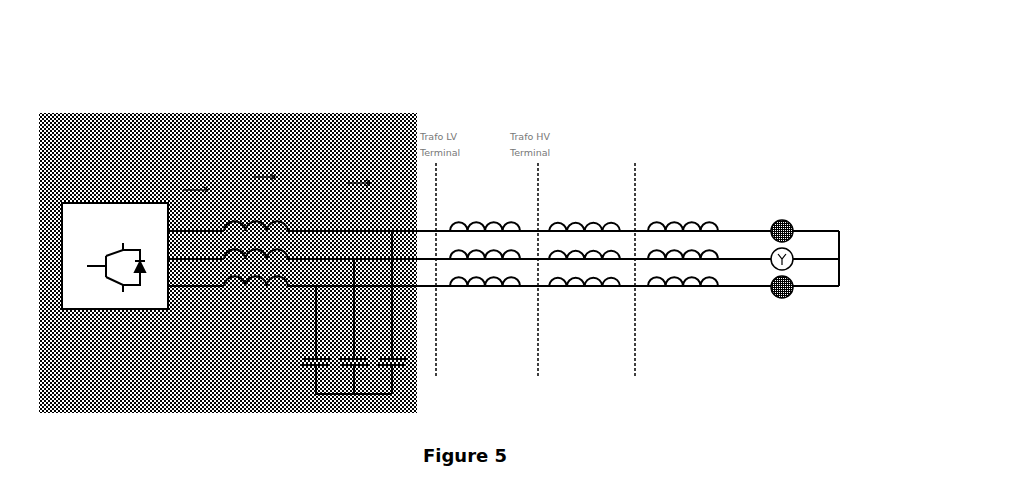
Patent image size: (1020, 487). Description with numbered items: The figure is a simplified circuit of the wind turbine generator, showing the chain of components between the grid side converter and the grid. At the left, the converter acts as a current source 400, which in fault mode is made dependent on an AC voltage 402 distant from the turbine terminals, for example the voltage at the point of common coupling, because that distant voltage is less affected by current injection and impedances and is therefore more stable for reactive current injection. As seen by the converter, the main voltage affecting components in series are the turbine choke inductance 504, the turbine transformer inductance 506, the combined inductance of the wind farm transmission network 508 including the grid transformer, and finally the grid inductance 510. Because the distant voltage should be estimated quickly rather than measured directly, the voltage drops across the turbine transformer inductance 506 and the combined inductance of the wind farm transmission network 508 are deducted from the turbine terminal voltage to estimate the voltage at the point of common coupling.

The current source 400 is at (234, 112).
The AC voltage 402 is at (650, 120).
The turbine choke inductance 504 is at (297, 214).
The turbine transformer inductance 506 is at (490, 210).
The combined inductance of the wind farm transmission network 508 is at (601, 210).
The grid inductance 510 is at (697, 220).